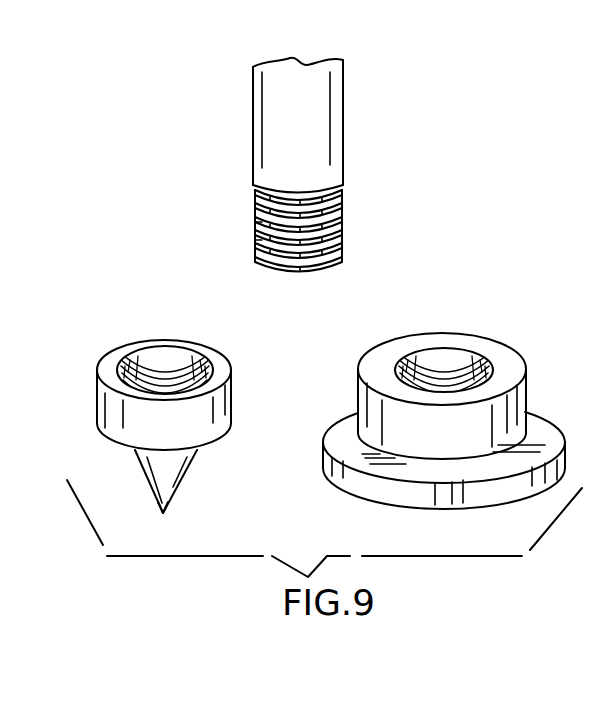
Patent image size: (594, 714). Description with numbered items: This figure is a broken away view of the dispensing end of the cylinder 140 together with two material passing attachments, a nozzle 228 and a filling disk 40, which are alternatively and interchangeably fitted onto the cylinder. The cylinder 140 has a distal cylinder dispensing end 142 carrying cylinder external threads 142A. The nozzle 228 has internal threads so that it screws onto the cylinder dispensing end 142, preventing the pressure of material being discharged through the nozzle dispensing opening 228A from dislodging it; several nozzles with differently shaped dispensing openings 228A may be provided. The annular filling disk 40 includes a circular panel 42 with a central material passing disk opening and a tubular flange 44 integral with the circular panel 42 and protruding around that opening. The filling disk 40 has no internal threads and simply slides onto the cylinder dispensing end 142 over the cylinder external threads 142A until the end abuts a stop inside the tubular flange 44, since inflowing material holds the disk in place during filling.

The cylinder 140 is at (330, 162).
The cylinder dispensing end 142 is at (342, 227).
The cylinder external threads 142A is at (256, 241).
The nozzle 228 is at (164, 330).
The nozzle dispensing opening 228A is at (165, 512).
The filling disk 40 is at (425, 401).
The circular panel 42 is at (347, 423).
The tubular flange 44 is at (540, 377).